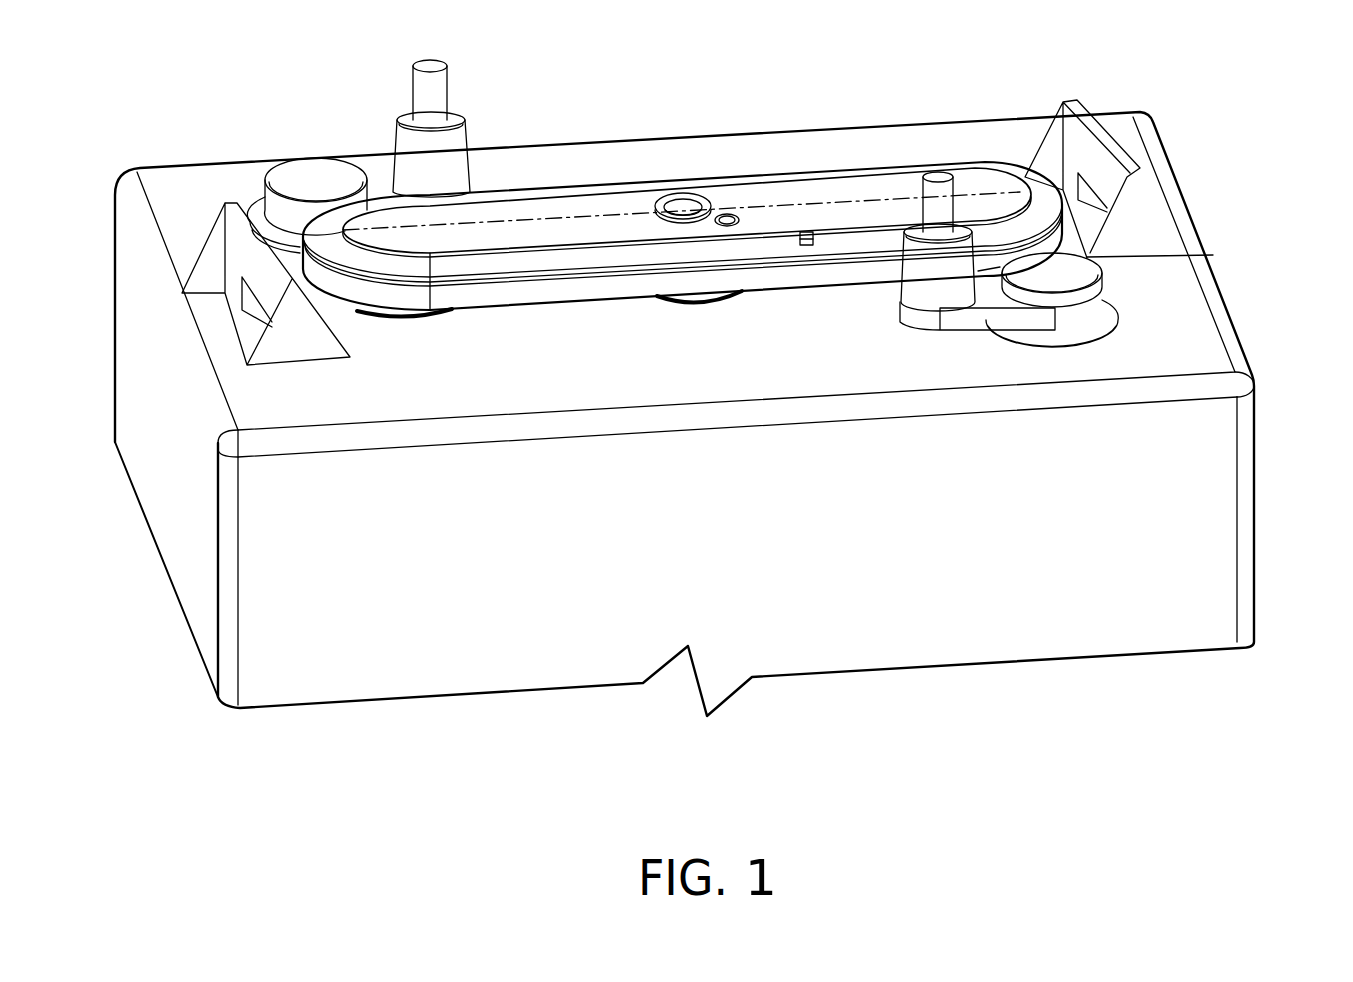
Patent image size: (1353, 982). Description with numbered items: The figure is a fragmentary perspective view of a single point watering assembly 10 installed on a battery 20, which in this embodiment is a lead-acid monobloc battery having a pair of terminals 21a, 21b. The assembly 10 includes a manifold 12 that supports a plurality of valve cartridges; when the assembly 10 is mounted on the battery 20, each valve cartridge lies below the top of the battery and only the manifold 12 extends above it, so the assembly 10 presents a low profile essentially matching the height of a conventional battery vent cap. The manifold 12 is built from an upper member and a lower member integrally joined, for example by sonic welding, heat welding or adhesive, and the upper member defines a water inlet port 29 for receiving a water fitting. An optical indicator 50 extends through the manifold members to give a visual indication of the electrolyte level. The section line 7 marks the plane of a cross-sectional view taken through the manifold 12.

The section line 7- 7 is at (303, 280).
The single point watering assembly 10 is at (957, 147).
The manifold 12 is at (805, 195).
The battery 20 is at (1213, 258).
The terminal 21a is at (452, 146).
The terminal 21b is at (920, 287).
The water inlet port 29 is at (675, 195).
The optical indicator 50 is at (729, 212).